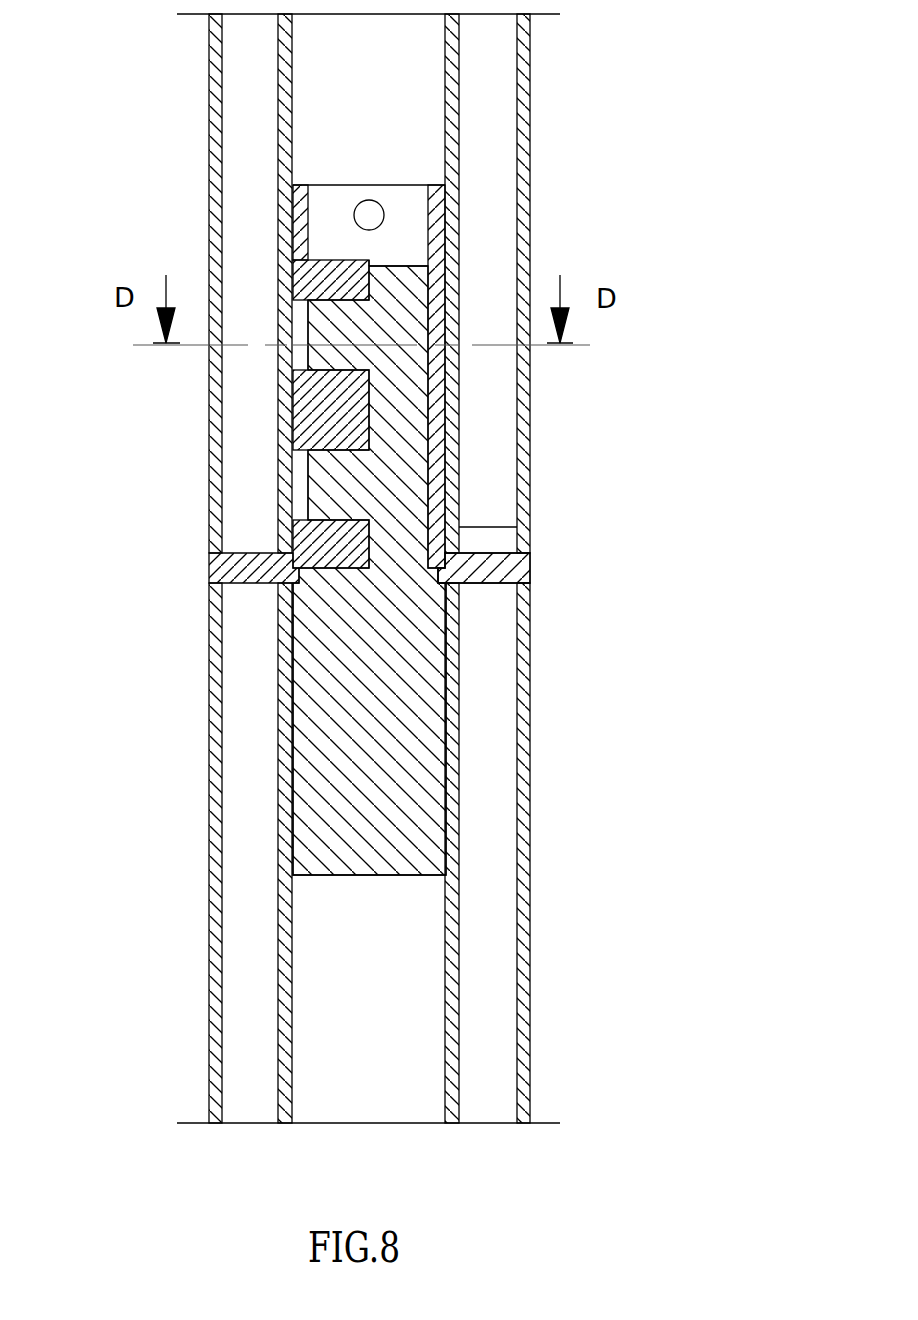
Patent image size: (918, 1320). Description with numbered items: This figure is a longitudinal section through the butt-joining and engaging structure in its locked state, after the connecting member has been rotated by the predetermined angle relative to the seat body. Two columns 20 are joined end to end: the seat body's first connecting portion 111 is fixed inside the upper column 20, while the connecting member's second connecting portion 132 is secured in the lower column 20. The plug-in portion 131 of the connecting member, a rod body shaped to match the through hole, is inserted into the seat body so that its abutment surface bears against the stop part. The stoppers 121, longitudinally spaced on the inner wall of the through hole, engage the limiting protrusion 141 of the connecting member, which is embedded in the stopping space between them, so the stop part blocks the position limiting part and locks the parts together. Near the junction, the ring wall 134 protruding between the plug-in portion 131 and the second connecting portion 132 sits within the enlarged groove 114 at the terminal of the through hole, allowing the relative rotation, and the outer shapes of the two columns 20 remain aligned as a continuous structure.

The column 20 is at (192, 142).
The first connecting portion 111 is at (433, 265).
The stopper 121 is at (333, 288).
The plug-in portion 131 is at (400, 428).
The second connecting portion 132 is at (408, 740).
The limiting protrusion 141 is at (325, 361).
The enlarged groove 114 is at (438, 574).
The ring wall 134 is at (484, 568).